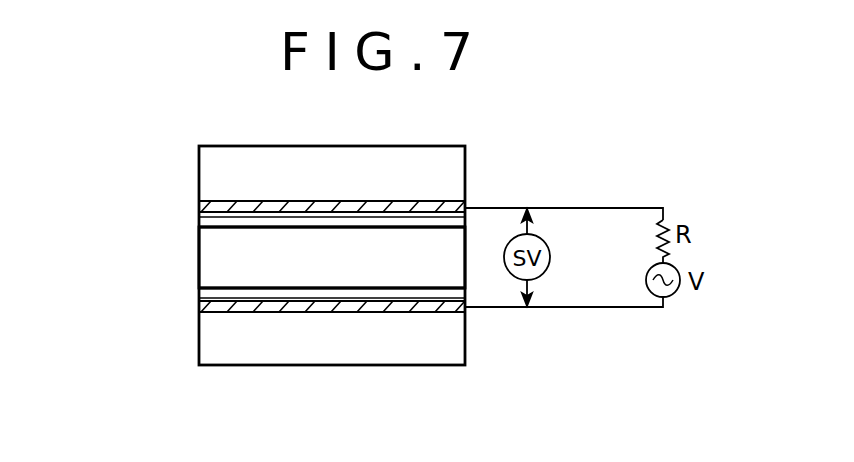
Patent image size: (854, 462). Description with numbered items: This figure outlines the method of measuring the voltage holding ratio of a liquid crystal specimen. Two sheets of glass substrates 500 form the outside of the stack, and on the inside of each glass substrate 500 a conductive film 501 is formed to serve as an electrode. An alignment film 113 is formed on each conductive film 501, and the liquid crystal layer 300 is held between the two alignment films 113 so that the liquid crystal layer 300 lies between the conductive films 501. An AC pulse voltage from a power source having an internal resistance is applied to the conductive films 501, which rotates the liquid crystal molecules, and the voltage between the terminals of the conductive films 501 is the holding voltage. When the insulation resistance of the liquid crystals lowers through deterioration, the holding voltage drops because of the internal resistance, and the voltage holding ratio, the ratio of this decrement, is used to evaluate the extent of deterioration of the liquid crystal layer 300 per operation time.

The glass substrate 500 is at (457, 174).
The conductive film 501 is at (200, 206).
The alignment film 113 is at (200, 215).
The liquid crystal layer 300 is at (212, 258).